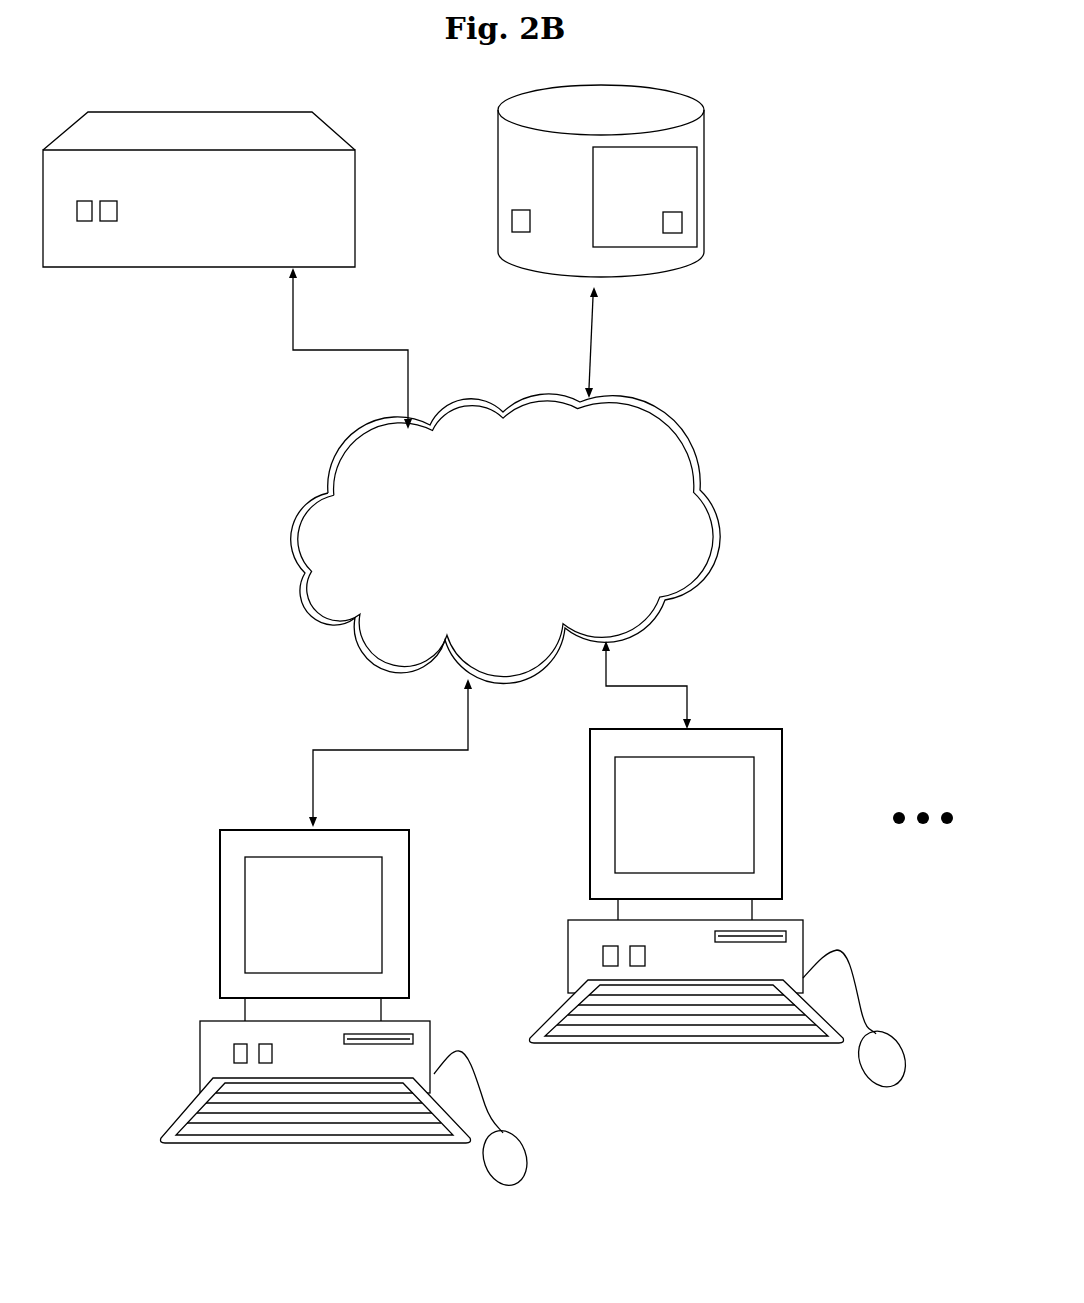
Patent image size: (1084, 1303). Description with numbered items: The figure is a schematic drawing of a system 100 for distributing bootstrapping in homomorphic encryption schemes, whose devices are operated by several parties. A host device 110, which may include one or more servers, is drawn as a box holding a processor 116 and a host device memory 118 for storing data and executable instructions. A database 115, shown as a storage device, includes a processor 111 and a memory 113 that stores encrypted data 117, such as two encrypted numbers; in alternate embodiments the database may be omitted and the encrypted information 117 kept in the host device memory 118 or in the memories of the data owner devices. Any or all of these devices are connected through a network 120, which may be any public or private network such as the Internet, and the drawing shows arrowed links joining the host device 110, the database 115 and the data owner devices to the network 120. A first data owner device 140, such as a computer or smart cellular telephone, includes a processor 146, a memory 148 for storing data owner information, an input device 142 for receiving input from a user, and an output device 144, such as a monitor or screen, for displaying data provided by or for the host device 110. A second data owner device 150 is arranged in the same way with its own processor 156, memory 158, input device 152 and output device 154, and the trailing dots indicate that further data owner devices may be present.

The system 100 is at (793, 272).
The host device 110 is at (217, 138).
The processor 111 is at (510, 220).
The memory 113 is at (613, 191).
The database 115 is at (586, 125).
The processor 116 is at (83, 222).
The encrypted data 117 is at (350, 252).
The host device memory 118 is at (107, 200).
The network 120 is at (505, 610).
The data owner device 140 is at (351, 970).
The input device 142 is at (514, 1138).
The output device 144 is at (309, 915).
The processor 146 is at (228, 1053).
The memory 148 is at (258, 1043).
The data owner device 150 is at (723, 873).
The input device 152 is at (889, 1040).
The output device 154 is at (681, 813).
The processor 156 is at (600, 950).
The memory 158 is at (627, 946).